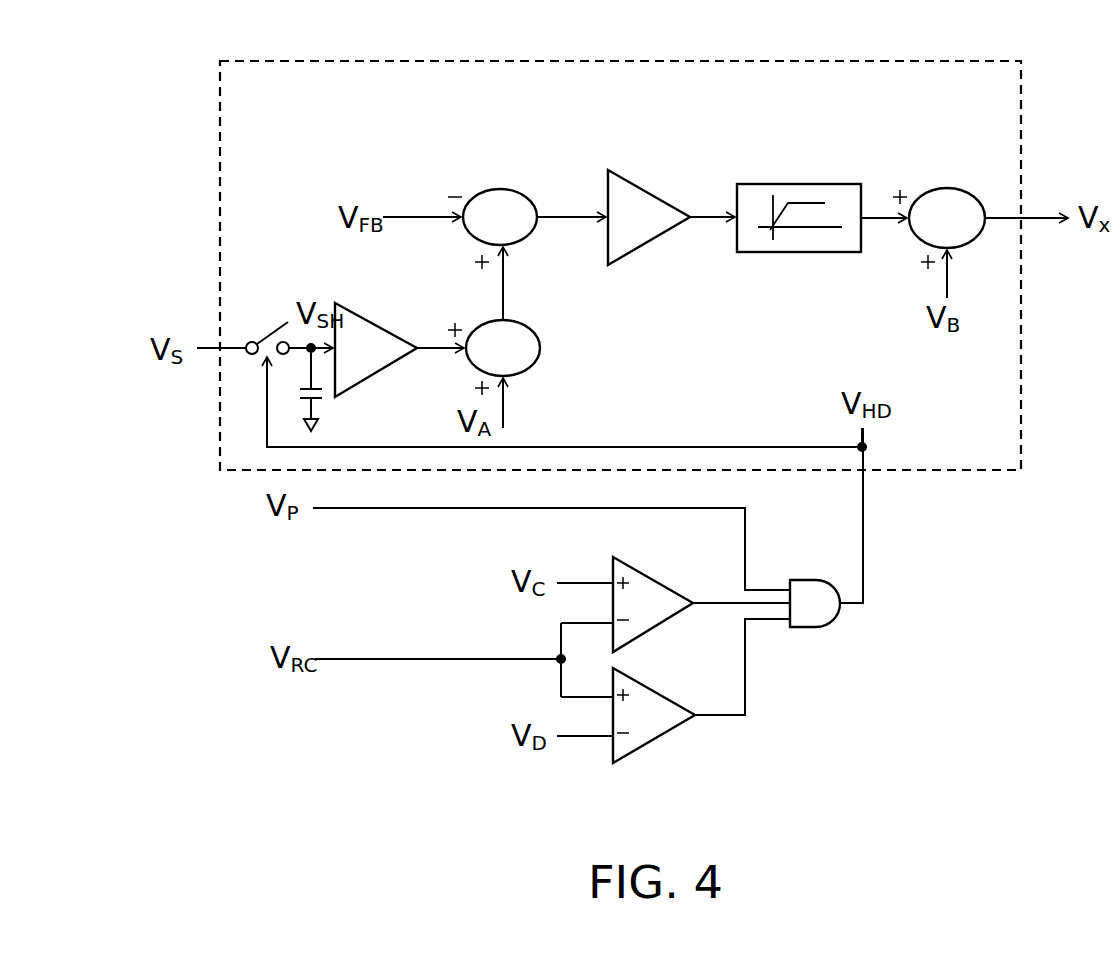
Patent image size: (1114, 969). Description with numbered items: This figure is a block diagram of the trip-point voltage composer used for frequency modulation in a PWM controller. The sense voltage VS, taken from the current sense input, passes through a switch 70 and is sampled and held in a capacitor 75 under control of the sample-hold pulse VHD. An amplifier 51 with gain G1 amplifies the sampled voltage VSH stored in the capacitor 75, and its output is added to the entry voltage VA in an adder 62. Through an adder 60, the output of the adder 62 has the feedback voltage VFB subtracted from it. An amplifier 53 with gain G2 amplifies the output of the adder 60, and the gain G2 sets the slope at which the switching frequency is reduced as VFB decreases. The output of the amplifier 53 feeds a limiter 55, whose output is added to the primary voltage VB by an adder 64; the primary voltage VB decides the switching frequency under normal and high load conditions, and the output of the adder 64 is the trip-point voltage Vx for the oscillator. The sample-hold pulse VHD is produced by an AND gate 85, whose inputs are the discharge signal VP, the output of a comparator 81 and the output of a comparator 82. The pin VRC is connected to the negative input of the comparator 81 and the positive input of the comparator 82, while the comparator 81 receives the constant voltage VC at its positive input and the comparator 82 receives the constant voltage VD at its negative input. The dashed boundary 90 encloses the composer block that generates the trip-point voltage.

The amplifier 51 is at (368, 321).
The amplifier 53 is at (644, 191).
The limiter 55 is at (822, 184).
The adder 60 is at (505, 191).
The adder 62 is at (527, 330).
The adder 64 is at (941, 189).
The switch 70 is at (268, 333).
The capacitor 75 is at (323, 396).
The comparator 81 is at (648, 578).
The comparator 82 is at (658, 741).
The AND gate 85 is at (814, 628).
The control circuit 90 is at (1022, 335).